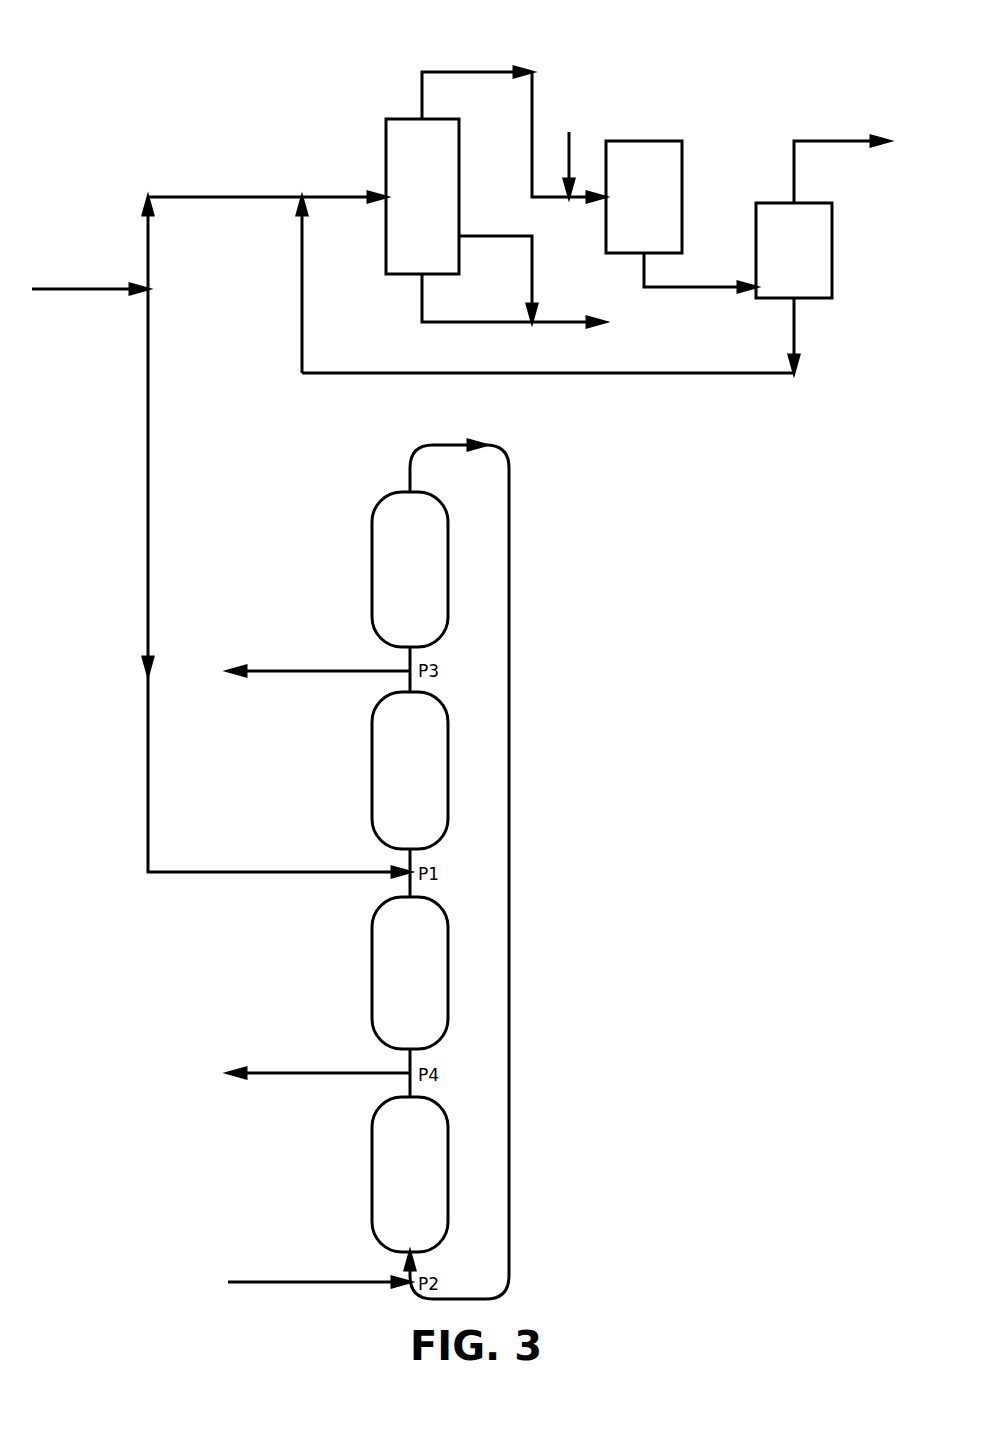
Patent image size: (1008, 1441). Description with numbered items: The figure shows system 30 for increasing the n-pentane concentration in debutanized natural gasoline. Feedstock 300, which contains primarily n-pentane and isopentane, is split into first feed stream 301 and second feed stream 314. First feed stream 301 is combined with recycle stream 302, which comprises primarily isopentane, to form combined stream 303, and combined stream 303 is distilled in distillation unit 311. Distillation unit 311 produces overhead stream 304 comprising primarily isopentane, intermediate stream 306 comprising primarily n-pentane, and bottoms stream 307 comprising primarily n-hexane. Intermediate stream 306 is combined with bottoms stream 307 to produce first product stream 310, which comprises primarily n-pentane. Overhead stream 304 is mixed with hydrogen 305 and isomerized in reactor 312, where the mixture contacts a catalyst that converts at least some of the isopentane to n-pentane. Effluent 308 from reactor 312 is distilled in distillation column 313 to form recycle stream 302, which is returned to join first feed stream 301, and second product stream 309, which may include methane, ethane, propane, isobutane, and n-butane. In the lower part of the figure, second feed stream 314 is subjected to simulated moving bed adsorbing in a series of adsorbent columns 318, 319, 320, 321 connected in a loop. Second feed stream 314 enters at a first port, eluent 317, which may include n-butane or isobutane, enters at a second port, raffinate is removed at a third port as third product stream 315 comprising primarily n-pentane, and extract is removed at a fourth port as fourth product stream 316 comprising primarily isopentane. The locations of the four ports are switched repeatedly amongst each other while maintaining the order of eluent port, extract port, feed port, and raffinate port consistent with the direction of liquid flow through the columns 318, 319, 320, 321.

The system 30 is at (214, 10).
The feedstock 300 is at (86, 289).
The first feed stream 301 is at (186, 197).
The recycle stream 302 is at (302, 287).
The combined stream 303 is at (342, 197).
The overhead stream 304 is at (422, 100).
The hydrogen 305 is at (569, 140).
The intermediate stream 306 is at (489, 236).
The bottoms stream 307 is at (489, 322).
The effluent 308 is at (644, 271).
The second product stream 309 is at (830, 141).
The first product stream 310 is at (580, 324).
The distillation unit 311 is at (422, 196).
The reactor 312 is at (644, 197).
The distillation column 313 is at (794, 288).
The second feed stream 314 is at (249, 872).
The third product stream 315 is at (352, 673).
The fourth product stream 316 is at (352, 1075).
The eluent 317 is at (352, 1285).
The adsorbent column 318 is at (410, 569).
The adsorbent column 319 is at (410, 770).
The adsorbent column 320 is at (410, 973).
The adsorbent column 321 is at (410, 1174).